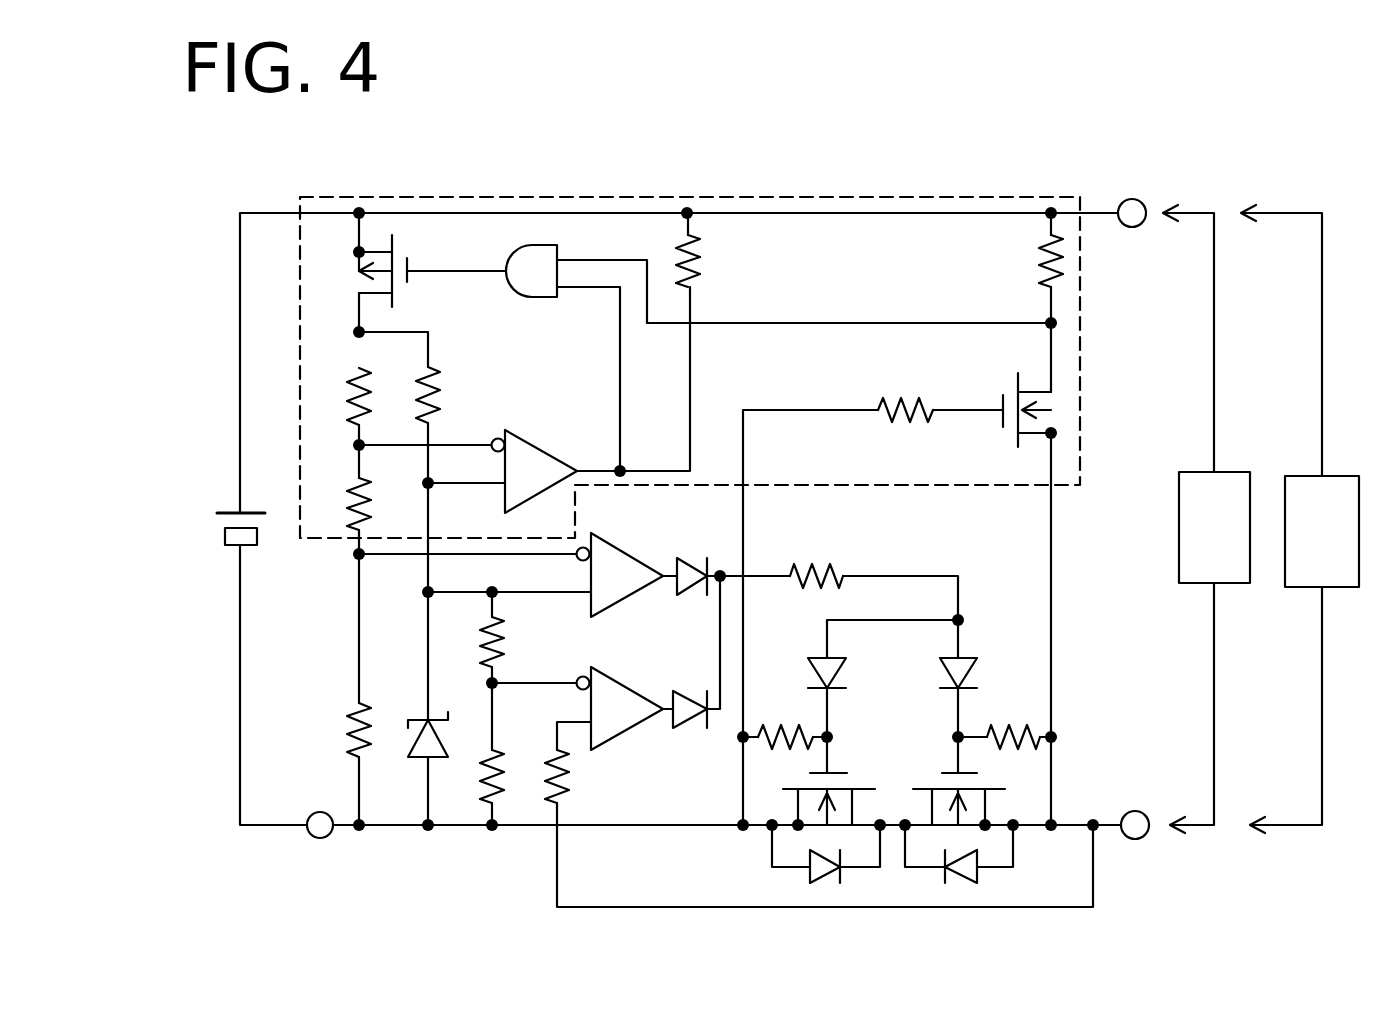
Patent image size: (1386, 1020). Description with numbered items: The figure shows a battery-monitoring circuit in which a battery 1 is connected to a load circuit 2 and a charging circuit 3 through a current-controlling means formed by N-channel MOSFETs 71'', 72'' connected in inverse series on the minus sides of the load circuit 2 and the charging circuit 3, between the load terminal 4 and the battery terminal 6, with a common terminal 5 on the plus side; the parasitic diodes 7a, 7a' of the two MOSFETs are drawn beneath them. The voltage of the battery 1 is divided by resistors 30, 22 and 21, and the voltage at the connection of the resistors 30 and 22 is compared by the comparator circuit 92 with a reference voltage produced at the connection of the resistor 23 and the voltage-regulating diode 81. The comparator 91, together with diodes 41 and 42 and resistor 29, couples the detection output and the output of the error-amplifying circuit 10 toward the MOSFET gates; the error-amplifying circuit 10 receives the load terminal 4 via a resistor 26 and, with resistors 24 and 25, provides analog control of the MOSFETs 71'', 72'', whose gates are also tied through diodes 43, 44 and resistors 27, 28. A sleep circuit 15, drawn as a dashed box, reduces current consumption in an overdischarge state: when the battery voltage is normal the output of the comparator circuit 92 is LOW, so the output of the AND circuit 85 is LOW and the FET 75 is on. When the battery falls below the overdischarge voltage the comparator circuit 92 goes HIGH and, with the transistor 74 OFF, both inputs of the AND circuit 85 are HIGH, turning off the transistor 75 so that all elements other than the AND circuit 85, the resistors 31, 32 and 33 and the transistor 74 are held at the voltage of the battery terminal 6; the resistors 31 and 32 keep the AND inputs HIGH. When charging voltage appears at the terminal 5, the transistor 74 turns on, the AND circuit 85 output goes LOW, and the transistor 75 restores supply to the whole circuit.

The battery 1 is at (222, 506).
The load circuit 2 is at (1206, 519).
The charging circuit 3 is at (1300, 519).
The load terminal 4 is at (1137, 840).
The common terminal 5 is at (1134, 199).
The battery terminal 6 is at (323, 840).
The sleep circuit 15 is at (738, 197).
The resistor 21 is at (340, 718).
The resistor 22 is at (370, 480).
The resistor 23 is at (447, 392).
The resistor 24 is at (505, 760).
The resistor 25 is at (508, 645).
The resistor 26 is at (575, 778).
The resistor 27 is at (785, 722).
The resistor 28 is at (1012, 722).
The resistor 29 is at (828, 565).
The resistor 30 is at (347, 387).
The resistor 31 is at (702, 262).
The resistor 32 is at (1040, 262).
The resistor 33 is at (905, 396).
The error-amplifying circuit 10 is at (620, 708).
The diode 41 is at (690, 714).
The diode 42 is at (700, 565).
The diode 43 is at (845, 672).
The diode 44 is at (965, 670).
The N-channel MOSFET 71'' is at (838, 773).
The N-channel MOSFET 72'' is at (954, 770).
The parasitic diode 7a is at (826, 892).
The parasitic diode 7a' is at (959, 890).
The transistor 74 is at (1012, 440).
The FET 75 is at (403, 245).
The voltage-regulating diode 81 is at (420, 706).
The AND circuit 85 is at (540, 282).
The comparator 91 is at (620, 575).
The comparator circuit 92 is at (535, 471).